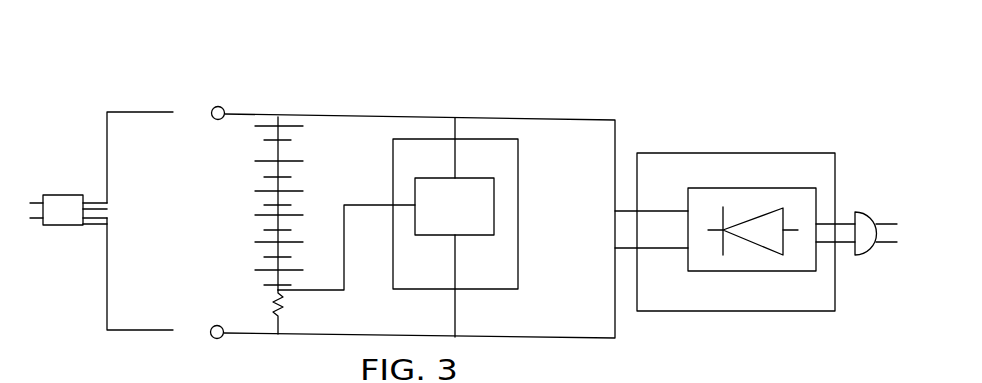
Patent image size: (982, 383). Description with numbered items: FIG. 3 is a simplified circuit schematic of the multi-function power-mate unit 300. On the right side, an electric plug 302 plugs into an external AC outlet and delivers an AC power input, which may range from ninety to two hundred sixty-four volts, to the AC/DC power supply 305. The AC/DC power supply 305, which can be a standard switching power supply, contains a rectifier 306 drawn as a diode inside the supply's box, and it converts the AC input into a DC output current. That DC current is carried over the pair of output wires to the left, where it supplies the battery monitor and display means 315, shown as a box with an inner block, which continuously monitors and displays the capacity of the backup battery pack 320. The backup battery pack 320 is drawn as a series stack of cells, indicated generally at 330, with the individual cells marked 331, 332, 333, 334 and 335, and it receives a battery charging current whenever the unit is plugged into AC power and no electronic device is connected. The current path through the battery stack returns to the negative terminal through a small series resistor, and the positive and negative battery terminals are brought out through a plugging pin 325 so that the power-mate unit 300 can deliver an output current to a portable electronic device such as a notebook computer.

The power-mate unit 300 is at (528, 52).
The electric plug 302 is at (853, 247).
The AC/DC power supply 305 is at (782, 292).
The rectifier diode 306 is at (760, 200).
The battery monitor and display means 315 is at (503, 260).
The backup battery pack 320 is at (242, 307).
The plugging pin 325 is at (63, 212).
The battery pack 330 is at (200, 205).
The first battery cell 331 is at (258, 140).
The second battery cell 332 is at (260, 172).
The third battery cell 333 is at (300, 199).
The fourth battery cell 334 is at (258, 227).
The fifth battery cell 335 is at (258, 282).